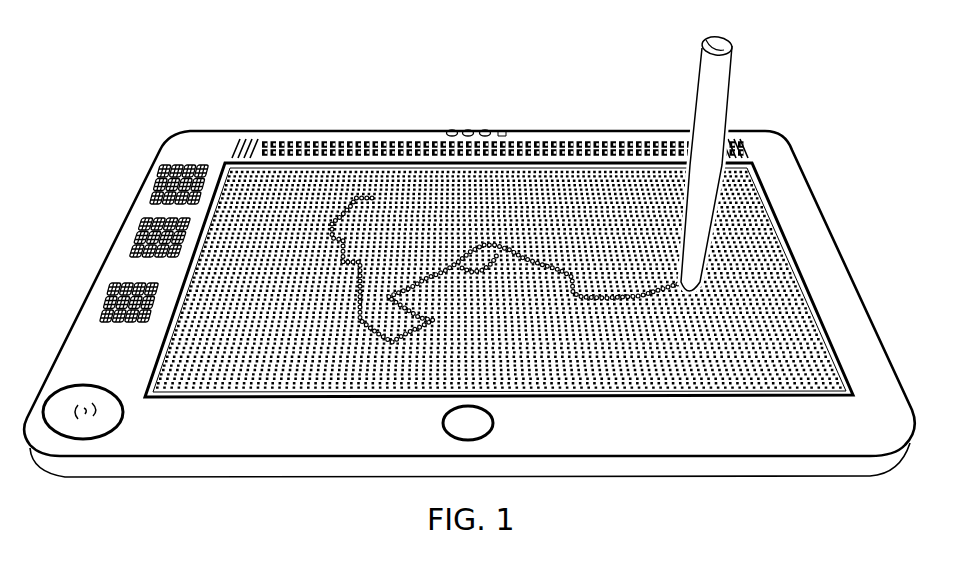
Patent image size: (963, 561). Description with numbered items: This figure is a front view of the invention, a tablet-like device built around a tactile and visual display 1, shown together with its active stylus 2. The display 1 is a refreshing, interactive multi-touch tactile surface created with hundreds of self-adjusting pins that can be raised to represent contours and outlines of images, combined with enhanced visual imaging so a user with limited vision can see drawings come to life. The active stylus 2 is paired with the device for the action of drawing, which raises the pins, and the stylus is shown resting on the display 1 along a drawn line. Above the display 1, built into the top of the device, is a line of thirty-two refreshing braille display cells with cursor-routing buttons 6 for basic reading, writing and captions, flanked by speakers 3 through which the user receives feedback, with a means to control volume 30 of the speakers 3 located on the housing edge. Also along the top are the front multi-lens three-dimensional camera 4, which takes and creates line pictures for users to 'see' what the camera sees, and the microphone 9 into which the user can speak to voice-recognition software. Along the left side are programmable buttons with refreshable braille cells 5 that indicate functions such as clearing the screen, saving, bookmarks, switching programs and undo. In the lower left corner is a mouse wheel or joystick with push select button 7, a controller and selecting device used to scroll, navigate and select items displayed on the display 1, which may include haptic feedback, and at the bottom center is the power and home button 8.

The tactile and visual display 1 is at (780, 345).
The active stylus 2 is at (723, 70).
The speaker 3 is at (244, 150).
The multi-lens 3D camera 4 is at (450, 134).
The programmable buttons with refreshable braille cells 5 is at (158, 170).
The braille display cells with cursor-routing buttons 6 is at (334, 148).
The mouse wheel or joystick with push select button 7 is at (62, 405).
The power and home button 8 is at (497, 430).
The microphone 9 is at (500, 134).
The means to control volume 30 is at (879, 342).